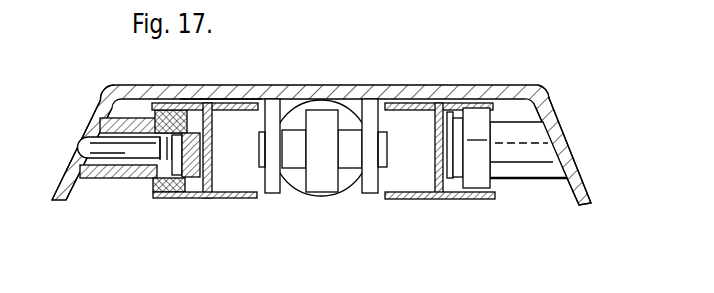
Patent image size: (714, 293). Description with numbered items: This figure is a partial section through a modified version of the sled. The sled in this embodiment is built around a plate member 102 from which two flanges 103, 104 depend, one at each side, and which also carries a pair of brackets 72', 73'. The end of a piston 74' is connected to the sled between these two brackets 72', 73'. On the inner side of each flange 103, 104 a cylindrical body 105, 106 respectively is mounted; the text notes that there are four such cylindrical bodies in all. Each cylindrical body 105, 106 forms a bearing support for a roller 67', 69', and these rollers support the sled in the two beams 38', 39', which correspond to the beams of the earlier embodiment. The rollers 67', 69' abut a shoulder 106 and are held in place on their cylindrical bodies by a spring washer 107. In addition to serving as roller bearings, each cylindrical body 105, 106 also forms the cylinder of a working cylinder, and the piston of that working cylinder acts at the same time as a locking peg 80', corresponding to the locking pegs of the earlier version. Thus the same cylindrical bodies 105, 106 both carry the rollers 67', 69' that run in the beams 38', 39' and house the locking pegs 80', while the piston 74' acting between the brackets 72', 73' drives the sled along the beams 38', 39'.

The plate member 102 is at (386, 85).
The depending flange 103 is at (96, 108).
The depending flange 104 is at (554, 110).
The cylindrical body 105 is at (121, 180).
The cylindrical body 106 is at (150, 184).
The spring washer 107 is at (209, 94).
The locking peg 80' is at (165, 118).
The roller 69' is at (172, 190).
The beam 39' is at (205, 182).
The beam 38' is at (440, 178).
The piston 74' is at (321, 116).
The bracket 72' is at (288, 179).
The bracket 73' is at (380, 179).
The roller 67' is at (487, 115).